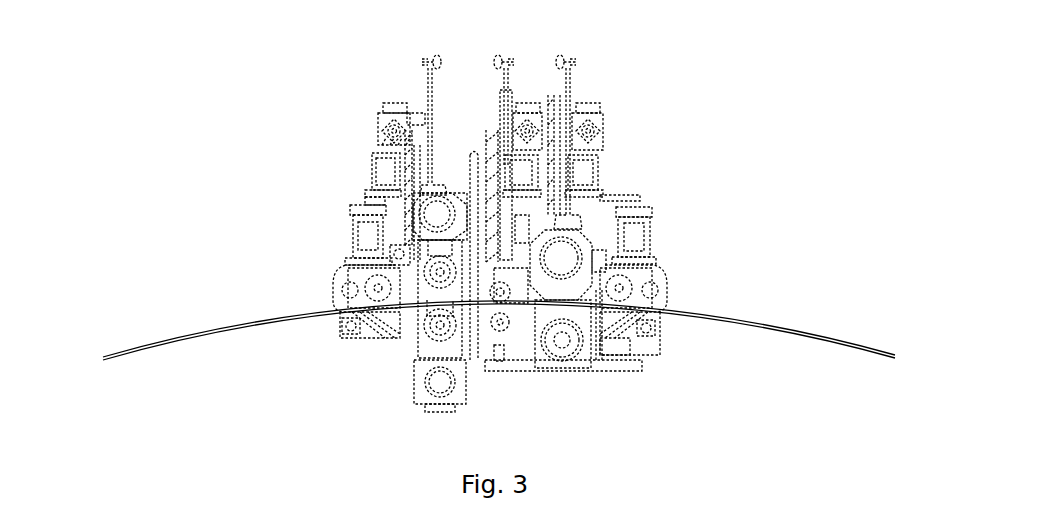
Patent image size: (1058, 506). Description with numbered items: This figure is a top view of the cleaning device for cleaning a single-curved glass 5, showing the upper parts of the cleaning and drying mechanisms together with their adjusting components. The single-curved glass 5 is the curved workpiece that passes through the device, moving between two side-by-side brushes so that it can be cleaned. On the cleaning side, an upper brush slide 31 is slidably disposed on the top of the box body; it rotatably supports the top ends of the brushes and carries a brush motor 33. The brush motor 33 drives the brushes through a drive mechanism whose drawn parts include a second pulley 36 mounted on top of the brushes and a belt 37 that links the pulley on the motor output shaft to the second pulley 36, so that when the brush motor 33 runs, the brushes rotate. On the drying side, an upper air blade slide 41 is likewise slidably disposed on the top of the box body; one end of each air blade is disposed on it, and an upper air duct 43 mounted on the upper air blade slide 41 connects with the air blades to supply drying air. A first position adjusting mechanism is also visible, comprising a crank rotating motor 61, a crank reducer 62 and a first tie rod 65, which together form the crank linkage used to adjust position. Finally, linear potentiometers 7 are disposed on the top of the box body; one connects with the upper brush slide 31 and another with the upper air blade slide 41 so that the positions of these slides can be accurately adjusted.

The single-curved glass 5 is at (228, 326).
The linear potentiometer 7 is at (365, 197).
The upper brush slide 31 is at (340, 331).
The brush motor 33 is at (437, 381).
The second pulley 36 is at (425, 325).
The belt 37 is at (423, 341).
The upper air blade slide 41 is at (636, 356).
The upper air duct 43 is at (566, 342).
The crank rotating motor 61 is at (370, 153).
The crank reducer 62 is at (383, 112).
The first tie rod 65 is at (580, 160).